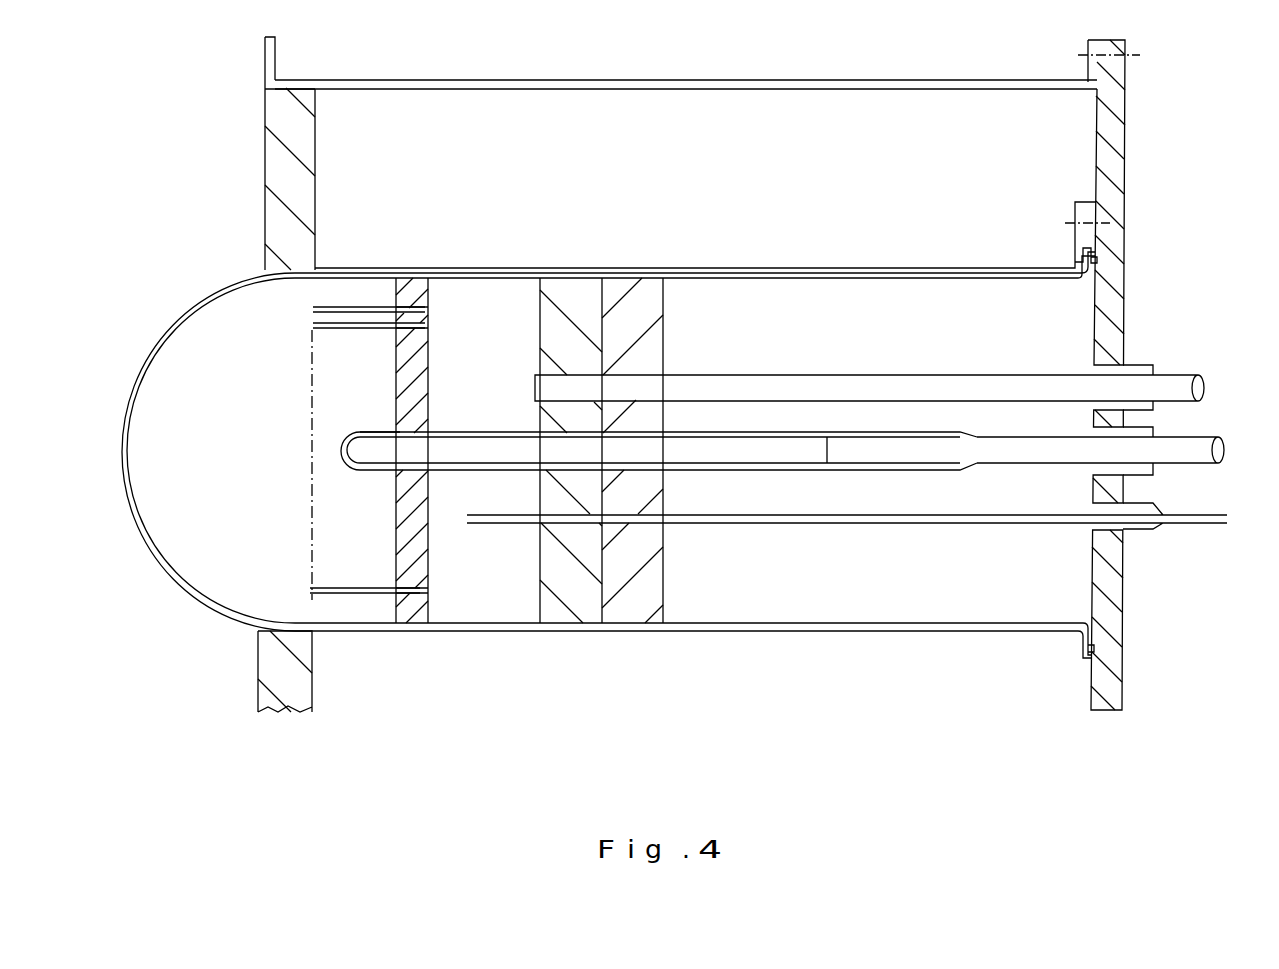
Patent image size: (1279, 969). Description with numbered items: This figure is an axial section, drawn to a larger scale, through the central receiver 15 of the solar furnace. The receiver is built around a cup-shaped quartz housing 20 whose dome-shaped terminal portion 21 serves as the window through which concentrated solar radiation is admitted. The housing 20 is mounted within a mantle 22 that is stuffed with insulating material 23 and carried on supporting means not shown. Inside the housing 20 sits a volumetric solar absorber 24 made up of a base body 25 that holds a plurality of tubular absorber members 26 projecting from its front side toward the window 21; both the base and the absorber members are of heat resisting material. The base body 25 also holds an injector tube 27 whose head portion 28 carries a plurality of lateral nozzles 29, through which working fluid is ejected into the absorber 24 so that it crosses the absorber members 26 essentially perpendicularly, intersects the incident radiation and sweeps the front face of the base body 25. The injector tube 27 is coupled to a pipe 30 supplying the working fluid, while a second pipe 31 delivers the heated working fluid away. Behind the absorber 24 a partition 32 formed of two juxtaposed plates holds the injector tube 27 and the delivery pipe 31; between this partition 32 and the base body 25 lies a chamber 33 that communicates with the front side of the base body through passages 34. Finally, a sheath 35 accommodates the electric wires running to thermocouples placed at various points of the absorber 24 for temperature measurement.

The central receiver 15 is at (923, 647).
The cup-shaped quartz housing 20 is at (785, 630).
The dome-shaped terminal portion 21 is at (128, 392).
The mantle 22 is at (768, 82).
The insulating material 23 is at (503, 100).
The volumetric solar absorber 24 is at (367, 360).
The base body 25 is at (420, 560).
The tubular absorber members 26 is at (357, 314).
The injector tube 27 is at (473, 440).
The head portion 28 is at (358, 454).
The lateral nozzles 29 is at (368, 432).
The pipe 30 is at (1205, 438).
The second pipe 31 is at (1170, 382).
The partition 32 is at (650, 603).
The chamber 33 is at (520, 593).
The passages 34 is at (425, 283).
The sheath 35 is at (900, 520).